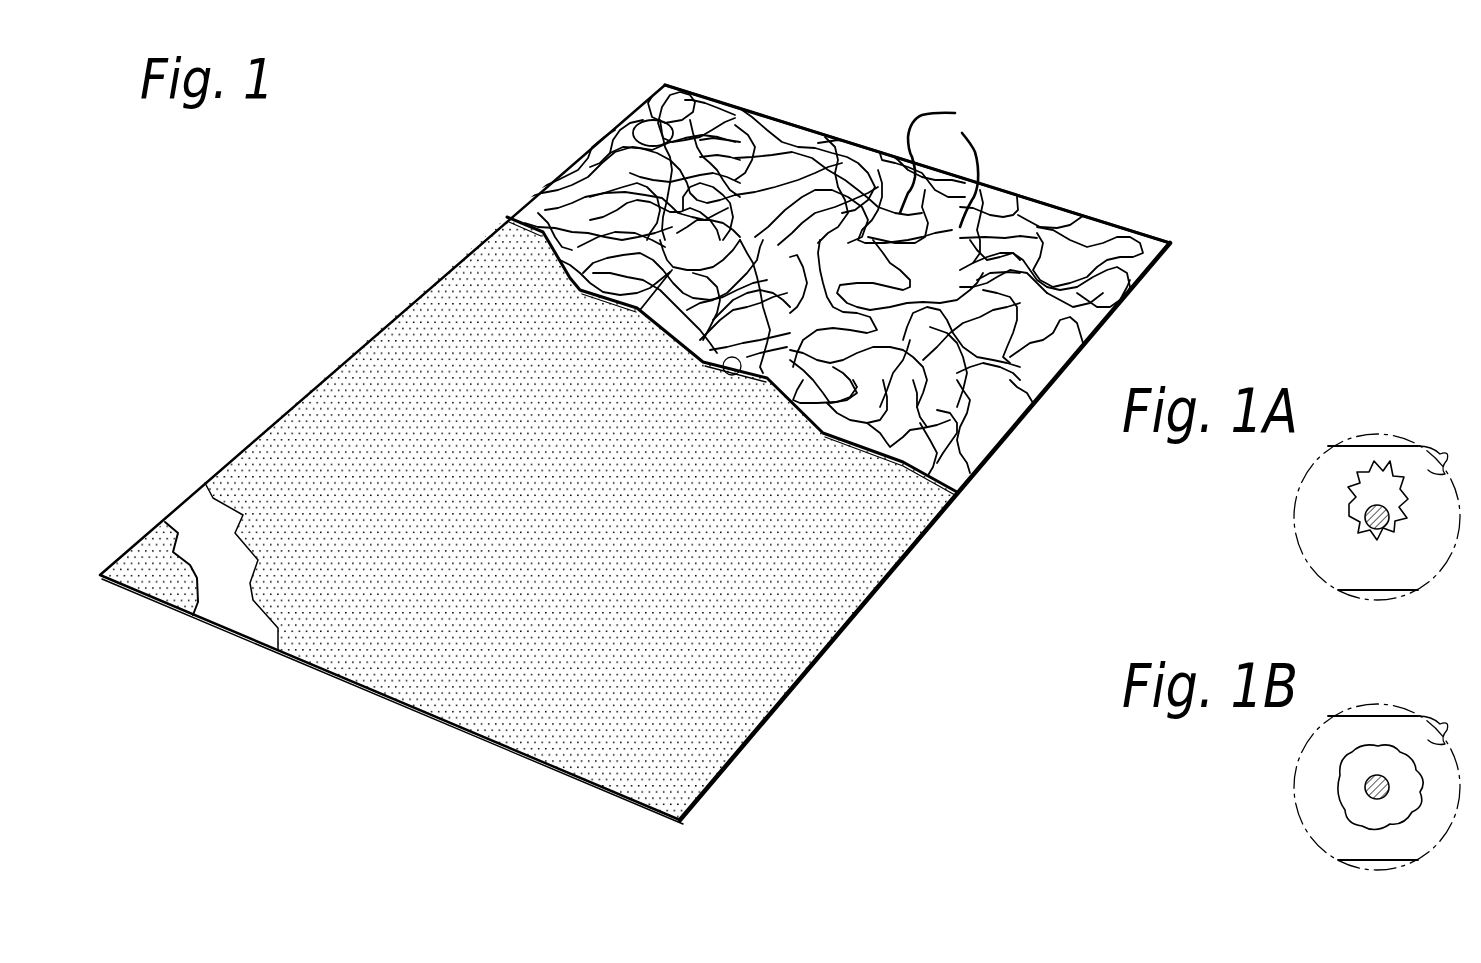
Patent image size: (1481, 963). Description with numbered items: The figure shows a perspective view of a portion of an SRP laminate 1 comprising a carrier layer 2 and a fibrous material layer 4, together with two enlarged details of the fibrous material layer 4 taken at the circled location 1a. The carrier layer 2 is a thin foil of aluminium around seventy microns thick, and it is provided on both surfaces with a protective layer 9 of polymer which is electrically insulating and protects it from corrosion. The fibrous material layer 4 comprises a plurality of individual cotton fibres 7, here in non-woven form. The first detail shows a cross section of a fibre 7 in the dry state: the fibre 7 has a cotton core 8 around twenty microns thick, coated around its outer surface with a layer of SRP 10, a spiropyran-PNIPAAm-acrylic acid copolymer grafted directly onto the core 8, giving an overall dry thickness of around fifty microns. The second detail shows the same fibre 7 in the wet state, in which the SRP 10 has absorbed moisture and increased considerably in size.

In FIG. 1, the SRP laminate 1 is at (452, 160).
In FIG. 1, the detail region 1a is at (734, 375).
In FIG. 1, the carrier layer 2 is at (200, 527).
In FIG. 1, the fibrous material layer 4 is at (800, 165).
In FIG. 1A, the fibrous material layer 4 is at (1444, 458).
In FIG. 1B, the fibrous material layer 4 is at (1444, 728).
In FIG. 1, the cotton fibre 7 is at (962, 133).
In FIG. 1A, the cotton fibre 7 is at (1396, 432).
In FIG. 1B, the cotton fibre 7 is at (1396, 702).
In FIG. 1A, the core 8 is at (1349, 503).
In FIG. 1B, the core 8 is at (1343, 775).
In FIG. 1, the protective layer 9 is at (262, 448).
In FIG. 1A, the layer of SRP 10 is at (1352, 530).
In FIG. 1B, the layer of SRP 10 is at (1352, 805).